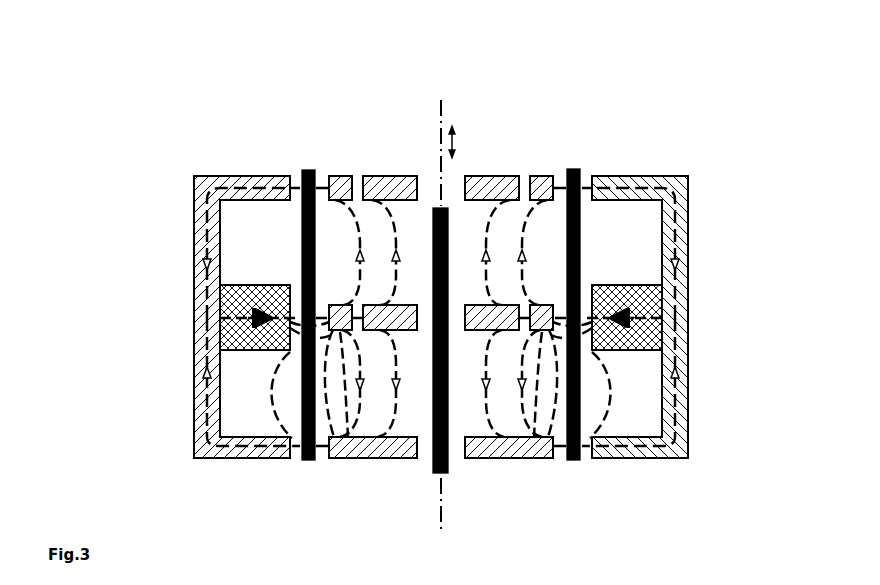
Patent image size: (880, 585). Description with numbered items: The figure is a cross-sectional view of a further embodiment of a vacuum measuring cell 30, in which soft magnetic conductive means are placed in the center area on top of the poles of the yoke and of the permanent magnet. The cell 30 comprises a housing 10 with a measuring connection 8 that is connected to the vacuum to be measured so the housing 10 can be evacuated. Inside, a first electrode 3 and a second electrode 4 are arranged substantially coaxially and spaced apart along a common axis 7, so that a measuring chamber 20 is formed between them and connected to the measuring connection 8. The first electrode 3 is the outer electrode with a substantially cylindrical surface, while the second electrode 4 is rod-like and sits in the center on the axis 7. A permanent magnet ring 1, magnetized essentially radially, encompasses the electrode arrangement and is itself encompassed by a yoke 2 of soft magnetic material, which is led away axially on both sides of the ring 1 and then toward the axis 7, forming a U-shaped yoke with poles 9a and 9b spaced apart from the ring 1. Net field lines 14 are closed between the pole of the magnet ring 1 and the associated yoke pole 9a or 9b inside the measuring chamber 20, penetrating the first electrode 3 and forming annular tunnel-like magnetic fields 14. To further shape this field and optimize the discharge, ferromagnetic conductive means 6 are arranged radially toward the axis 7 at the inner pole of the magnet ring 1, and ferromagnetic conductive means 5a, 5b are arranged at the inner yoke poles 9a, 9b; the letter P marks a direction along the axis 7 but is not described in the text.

The permanent magnet ring 1 is at (229, 347).
The yoke 2 is at (207, 251).
The first electrode 3 is at (304, 251).
The second electrode 4 is at (448, 401).
The ferromagnetic conductive means 5a is at (372, 183).
The ferromagnetic conductive means 5b is at (382, 441).
The ferromagnetic conductive means 6 is at (345, 332).
The axis 7 is at (443, 115).
The measuring connection 8 is at (410, 138).
The pole of the yoke 9a is at (287, 183).
The pole of the yoke 9b is at (285, 452).
The housing 10 is at (578, 166).
The net field lines 14 is at (388, 295).
The measuring chamber 20 is at (426, 223).
The vacuum measuring cell 30 is at (567, 57).
The displacement direction P is at (457, 142).